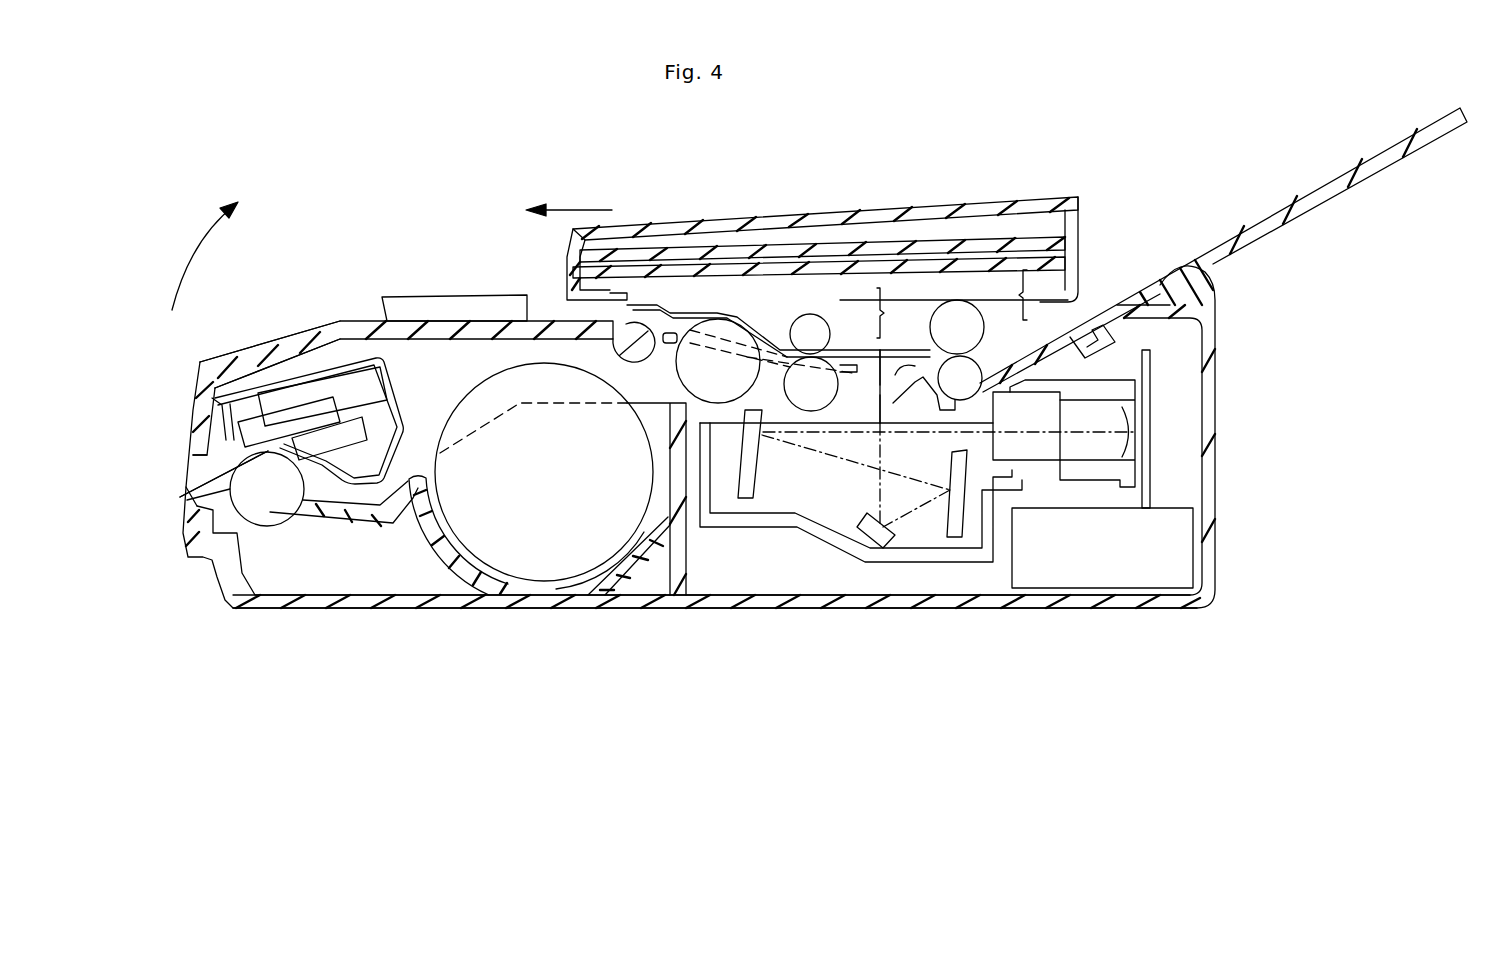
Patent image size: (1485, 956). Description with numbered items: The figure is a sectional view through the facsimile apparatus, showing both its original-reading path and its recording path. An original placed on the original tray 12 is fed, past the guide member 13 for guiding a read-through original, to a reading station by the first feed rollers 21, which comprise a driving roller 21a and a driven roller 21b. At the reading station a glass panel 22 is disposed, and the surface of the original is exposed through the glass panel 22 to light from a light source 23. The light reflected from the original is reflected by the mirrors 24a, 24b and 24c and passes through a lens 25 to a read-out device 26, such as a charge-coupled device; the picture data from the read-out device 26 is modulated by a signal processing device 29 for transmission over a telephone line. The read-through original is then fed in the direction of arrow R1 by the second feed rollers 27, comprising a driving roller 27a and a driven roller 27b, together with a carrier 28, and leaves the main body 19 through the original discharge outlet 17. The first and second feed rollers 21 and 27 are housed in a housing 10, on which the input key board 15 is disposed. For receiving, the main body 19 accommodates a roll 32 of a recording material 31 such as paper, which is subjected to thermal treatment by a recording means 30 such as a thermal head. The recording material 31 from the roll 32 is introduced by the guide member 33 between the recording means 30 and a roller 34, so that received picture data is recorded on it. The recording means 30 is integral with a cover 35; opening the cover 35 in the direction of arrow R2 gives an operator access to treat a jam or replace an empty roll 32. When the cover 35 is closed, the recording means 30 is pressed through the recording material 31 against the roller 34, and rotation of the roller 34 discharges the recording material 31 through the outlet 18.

The housing 10 is at (815, 283).
The original tray 12 is at (1288, 200).
The guide member 13 is at (450, 295).
The input key board 15 is at (730, 228).
The original discharge outlet 17 is at (560, 318).
The outlet 18 is at (190, 463).
The main body 19 is at (327, 610).
The first feed rollers 21 is at (1039, 295).
The driving roller 21a is at (960, 318).
The driven roller 21b is at (965, 370).
The glass panel 22 is at (862, 374).
The light source 23 is at (862, 409).
The mirror 24a is at (893, 540).
The mirror 24b is at (947, 459).
The mirror 24c is at (747, 489).
The lens 25 is at (1038, 452).
The read-out device 26 is at (1138, 415).
The second feed rollers 27 is at (895, 313).
The driving roller 27a is at (820, 375).
The driven roller 27b is at (816, 330).
The carrier 28 is at (700, 367).
The signal processing device 29 is at (1107, 573).
The recording means 30 is at (283, 400).
The recording material 31 is at (190, 488).
The roll 32 is at (537, 565).
The guide member 33 is at (405, 405).
The roller 34 is at (283, 512).
The cover 35 is at (243, 352).
The arrow R1 is at (580, 208).
The arrow R2 is at (175, 275).